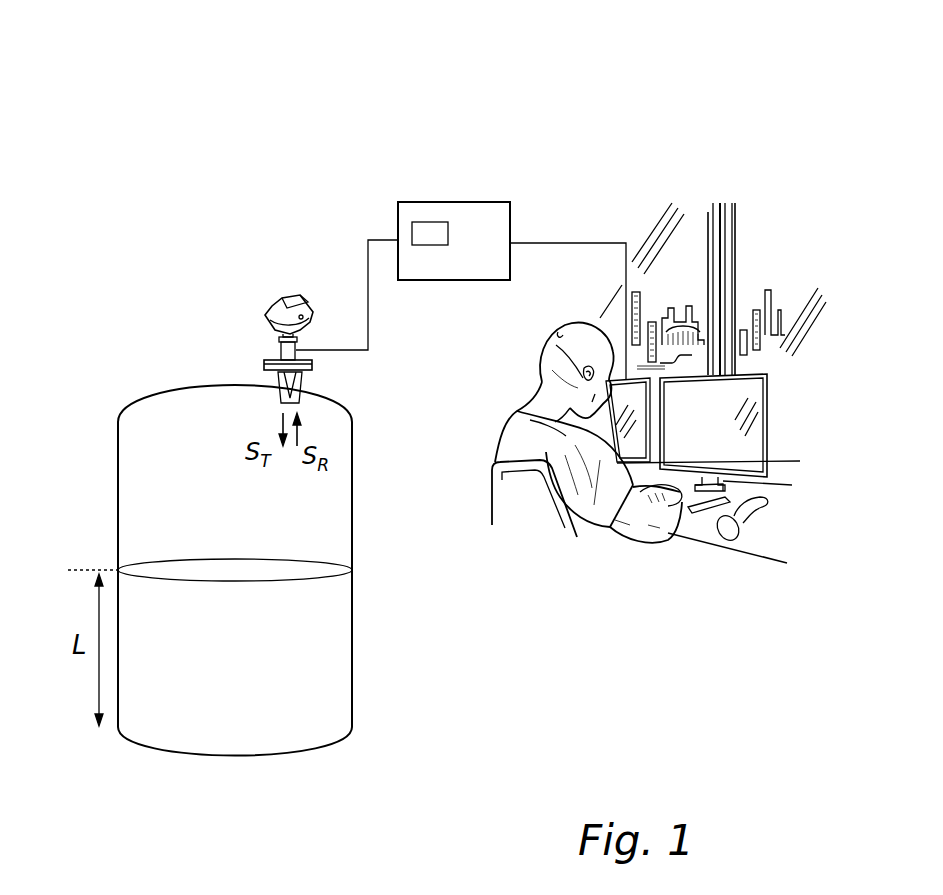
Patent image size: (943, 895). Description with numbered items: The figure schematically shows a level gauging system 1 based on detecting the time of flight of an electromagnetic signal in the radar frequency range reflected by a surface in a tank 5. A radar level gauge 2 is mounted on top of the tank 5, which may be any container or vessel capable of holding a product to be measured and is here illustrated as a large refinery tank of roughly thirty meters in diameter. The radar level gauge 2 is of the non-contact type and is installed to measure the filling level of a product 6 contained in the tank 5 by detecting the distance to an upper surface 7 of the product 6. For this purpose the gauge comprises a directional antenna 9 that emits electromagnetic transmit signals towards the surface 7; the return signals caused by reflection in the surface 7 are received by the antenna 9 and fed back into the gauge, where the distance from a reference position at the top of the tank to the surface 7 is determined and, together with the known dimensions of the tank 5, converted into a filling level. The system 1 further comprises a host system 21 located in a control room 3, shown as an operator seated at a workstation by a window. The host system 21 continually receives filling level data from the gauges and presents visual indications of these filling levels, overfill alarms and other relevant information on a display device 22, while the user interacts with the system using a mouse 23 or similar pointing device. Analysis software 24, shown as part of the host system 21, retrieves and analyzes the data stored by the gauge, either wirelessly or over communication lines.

The level gauging system 1 is at (590, 63).
The radar level gauge 2 is at (238, 293).
The control room 3 is at (768, 256).
The tank 5 is at (118, 510).
The product 6 is at (214, 677).
The upper surface 7 is at (202, 570).
The directional antenna 9 is at (272, 395).
The host system 21 is at (475, 202).
The display device 22 is at (770, 400).
The mouse 23 is at (747, 532).
The analysis software 24 is at (430, 222).